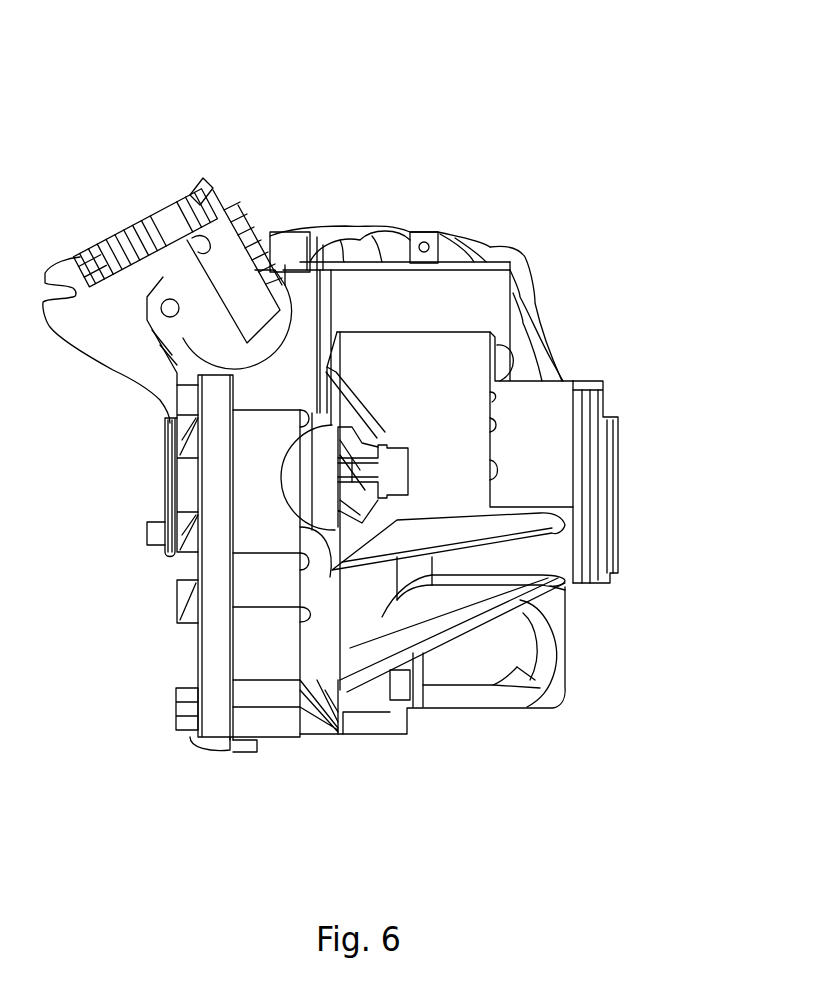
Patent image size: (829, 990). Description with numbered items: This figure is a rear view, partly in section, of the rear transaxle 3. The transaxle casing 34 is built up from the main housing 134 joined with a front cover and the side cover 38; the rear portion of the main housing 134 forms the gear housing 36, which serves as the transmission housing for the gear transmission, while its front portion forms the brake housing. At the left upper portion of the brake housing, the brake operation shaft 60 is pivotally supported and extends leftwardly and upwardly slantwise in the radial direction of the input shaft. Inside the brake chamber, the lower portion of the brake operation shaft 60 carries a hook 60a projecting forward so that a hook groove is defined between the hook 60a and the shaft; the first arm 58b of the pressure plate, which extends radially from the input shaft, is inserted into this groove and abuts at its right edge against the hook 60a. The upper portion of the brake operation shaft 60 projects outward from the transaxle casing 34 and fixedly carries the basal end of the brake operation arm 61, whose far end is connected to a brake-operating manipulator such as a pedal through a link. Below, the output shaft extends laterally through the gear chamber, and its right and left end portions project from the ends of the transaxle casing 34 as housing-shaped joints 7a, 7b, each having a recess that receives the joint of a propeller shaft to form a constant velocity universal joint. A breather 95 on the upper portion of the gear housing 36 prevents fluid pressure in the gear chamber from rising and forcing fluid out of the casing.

The rear transaxle 3 is at (653, 104).
The brake operation shaft 60 is at (170, 190).
The hook 60a is at (262, 232).
The brake operation arm 61 is at (110, 240).
The first arm 58b is at (177, 347).
The breather 95 is at (440, 228).
The transaxle casing 34 is at (518, 247).
The housing-shaped joint 7a is at (166, 490).
The second flange 7b is at (627, 487).
The side cover 38 is at (208, 750).
The main housing 134 is at (350, 733).
The gear housing 36 is at (407, 735).